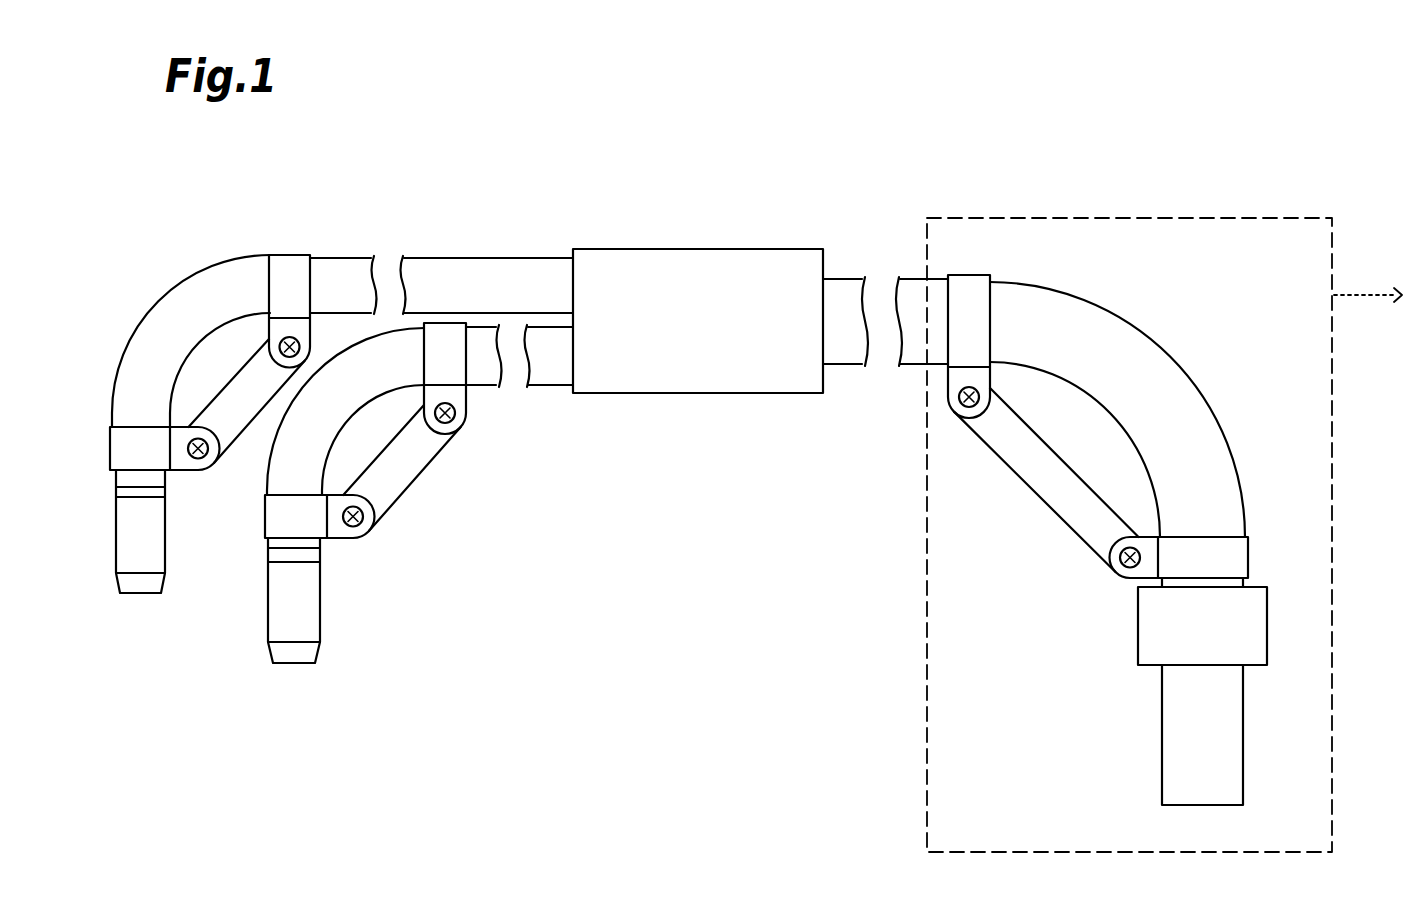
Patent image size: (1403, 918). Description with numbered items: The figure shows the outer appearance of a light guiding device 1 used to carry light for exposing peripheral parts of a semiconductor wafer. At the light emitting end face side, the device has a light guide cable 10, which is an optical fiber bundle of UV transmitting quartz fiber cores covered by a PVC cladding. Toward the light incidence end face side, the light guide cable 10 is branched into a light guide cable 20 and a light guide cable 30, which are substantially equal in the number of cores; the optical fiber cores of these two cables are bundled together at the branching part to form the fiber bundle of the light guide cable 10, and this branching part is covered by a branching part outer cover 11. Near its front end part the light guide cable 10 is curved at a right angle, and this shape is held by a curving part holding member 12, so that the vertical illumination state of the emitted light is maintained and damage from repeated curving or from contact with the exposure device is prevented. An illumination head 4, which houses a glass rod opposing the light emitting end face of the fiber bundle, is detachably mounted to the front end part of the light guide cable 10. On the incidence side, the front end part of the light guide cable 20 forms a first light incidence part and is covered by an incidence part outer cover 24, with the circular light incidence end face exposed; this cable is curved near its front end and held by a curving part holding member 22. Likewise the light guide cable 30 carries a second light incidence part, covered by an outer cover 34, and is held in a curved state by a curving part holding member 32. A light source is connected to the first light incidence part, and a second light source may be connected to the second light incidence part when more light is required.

The light guiding device 1 is at (1164, 535).
The illumination head 4 is at (1126, 626).
The light guide cable 10 is at (847, 352).
The branching part outer cover 11 is at (763, 263).
The curving part holding member 12 is at (1036, 508).
The light guide cable 20 is at (550, 277).
The curving part holding member 22 is at (233, 456).
The incidence part outer cover 24 is at (155, 552).
The light guide cable 30 is at (552, 370).
The curving part holding member 32 is at (418, 492).
The nozzle 34 is at (307, 605).